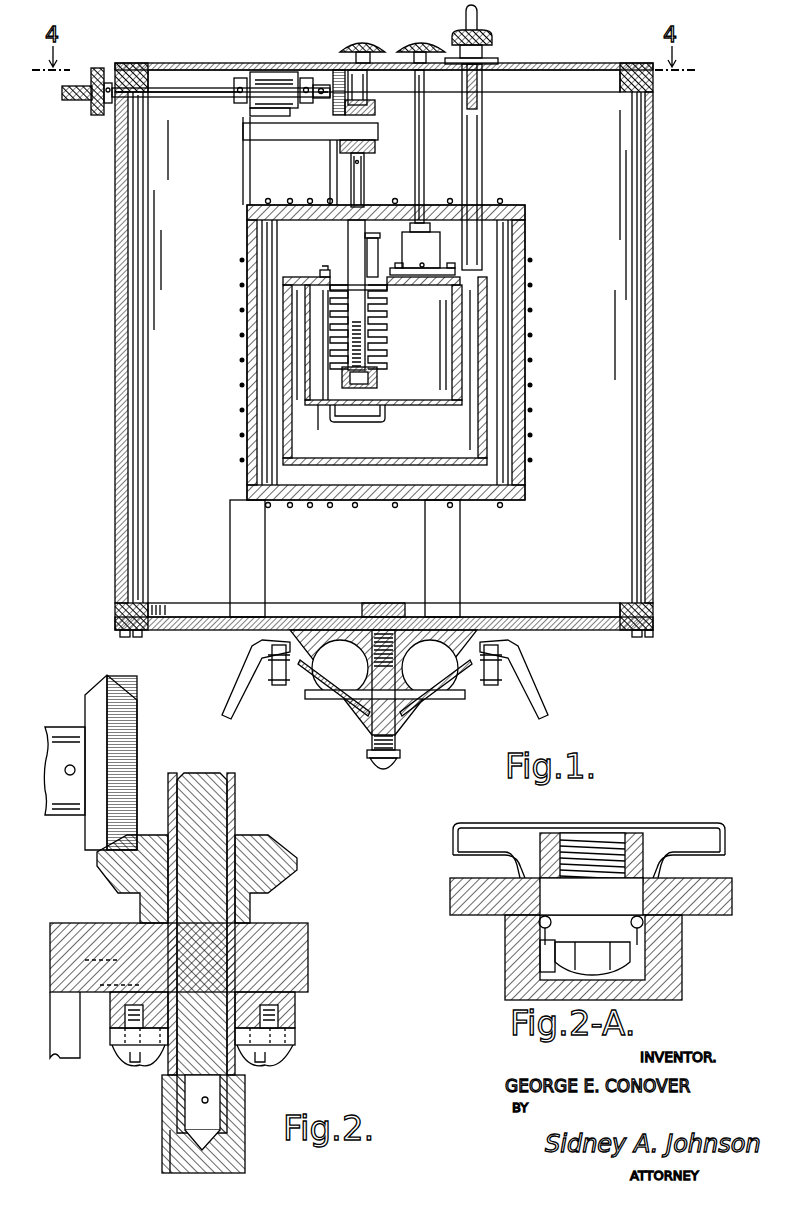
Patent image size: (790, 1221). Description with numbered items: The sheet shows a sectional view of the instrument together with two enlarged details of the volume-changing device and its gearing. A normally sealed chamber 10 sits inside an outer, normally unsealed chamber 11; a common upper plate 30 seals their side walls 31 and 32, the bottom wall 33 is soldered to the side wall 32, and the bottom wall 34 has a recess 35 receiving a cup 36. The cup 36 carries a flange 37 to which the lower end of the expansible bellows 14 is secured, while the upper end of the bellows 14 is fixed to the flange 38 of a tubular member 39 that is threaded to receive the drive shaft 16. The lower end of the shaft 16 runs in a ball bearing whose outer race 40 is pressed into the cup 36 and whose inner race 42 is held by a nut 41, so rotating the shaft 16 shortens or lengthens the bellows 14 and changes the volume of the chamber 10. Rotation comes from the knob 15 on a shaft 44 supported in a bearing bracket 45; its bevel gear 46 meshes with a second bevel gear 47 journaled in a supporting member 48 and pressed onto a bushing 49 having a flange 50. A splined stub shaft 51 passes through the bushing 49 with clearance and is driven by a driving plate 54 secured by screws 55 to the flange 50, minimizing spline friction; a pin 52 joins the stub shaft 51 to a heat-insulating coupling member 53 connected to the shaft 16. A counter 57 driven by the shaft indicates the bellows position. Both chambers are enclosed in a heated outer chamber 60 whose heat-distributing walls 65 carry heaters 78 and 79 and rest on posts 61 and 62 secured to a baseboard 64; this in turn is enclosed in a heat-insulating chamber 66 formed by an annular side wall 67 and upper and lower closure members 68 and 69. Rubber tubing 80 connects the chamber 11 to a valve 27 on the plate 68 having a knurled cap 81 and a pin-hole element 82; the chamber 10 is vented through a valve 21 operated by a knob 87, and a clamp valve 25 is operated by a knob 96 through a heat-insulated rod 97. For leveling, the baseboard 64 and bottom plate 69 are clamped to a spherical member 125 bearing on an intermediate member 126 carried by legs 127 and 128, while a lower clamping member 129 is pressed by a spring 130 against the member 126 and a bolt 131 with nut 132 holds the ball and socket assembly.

In FIG. 1, the normally sealed chamber 10 is at (423, 332).
In FIG. 1, the outer and normally unsealed chamber 11 is at (410, 449).
In FIG. 1, the expansible bellows 14 is at (387, 325).
In FIG. 2-A, the expansible bellows 14 is at (453, 840).
In FIG. 1, the knob 15 is at (78, 102).
In FIG. 1, the drive shaft 16 is at (348, 234).
In FIG. 2-A, the drive shaft 16 is at (610, 832).
In FIG. 1, the valve 21 is at (384, 262).
In FIG. 1, the clamp valve 25 is at (428, 260).
In FIG. 1, the valve 27 is at (520, 66).
In FIG. 1, the upper plate or closure member 30 is at (300, 277).
In FIG. 1, the side wall 31 is at (455, 374).
In FIG. 1, the side wall 32 is at (478, 435).
In FIG. 1, the bottom wall 33 is at (389, 465).
In FIG. 1, the bottom wall 34 is at (318, 408).
In FIG. 1, the recess 35 is at (350, 421).
In FIG. 1, the cup 36 is at (377, 381).
In FIG. 2-A, the cup 36 is at (510, 955).
In FIG. 2-A, the flange 37 is at (470, 915).
In FIG. 1, the flange 38 is at (327, 261).
In FIG. 1, the tubular member 39 is at (385, 298).
In FIG. 2-A, the tubular member 39 is at (540, 838).
In FIG. 2-A, the outer race 40 is at (645, 935).
In FIG. 2-A, the nut 41 is at (622, 960).
In FIG. 2-A, the inner race 42 is at (543, 958).
In FIG. 1, the shaft 44 is at (180, 97).
In FIG. 1, the bearing bracket 45 is at (243, 122).
In FIG. 1, the bevel gear 46 is at (333, 72).
In FIG. 2, the bevel gear 46 is at (100, 680).
In FIG. 1, the second bevel gear 47 is at (375, 108).
In FIG. 2, the second bevel gear 47 is at (285, 852).
In FIG. 1, the supporting member 48 is at (378, 133).
In FIG. 2, the supporting member 48 is at (72, 923).
In FIG. 2, the bushing 49 is at (240, 820).
In FIG. 2, the flange 50 is at (296, 1014).
In FIG. 1, the splined stub shaft 51 is at (367, 85).
In FIG. 2, the splined stub shaft 51 is at (218, 773).
In FIG. 2, the pin 52 is at (190, 1102).
In FIG. 1, the coupling member 53 is at (364, 181).
In FIG. 2, the coupling member 53 is at (162, 1143).
In FIG. 2, the driving plate 54 is at (296, 1040).
In FIG. 2, the screws 55 is at (122, 1062).
In FIG. 1, the counter 57 is at (275, 72).
In FIG. 1, the outer chamber 60 is at (512, 241).
In FIG. 1, the post 61 is at (265, 546).
In FIG. 1, the post 62 is at (460, 546).
In FIG. 1, the baseboard 64 is at (597, 630).
In FIG. 1, the walls of heat-distributing material 65 is at (512, 205).
In FIG. 1, the heat-insulating chamber 66 is at (196, 299).
In FIG. 1, the annular side wall 67 is at (115, 448).
In FIG. 1, the upper closure member 68 is at (166, 70).
In FIG. 1, the lower closure member 69 is at (167, 630).
In FIG. 1, the electrical resistor or heater 78 is at (528, 310).
In FIG. 1, the electrical resistor or heater 79 is at (290, 199).
In FIG. 1, the rubber tubing 80 is at (482, 154).
In FIG. 1, the knurled cap 81 is at (492, 39).
In FIG. 1, the additional element 82 is at (477, 20).
In FIG. 1, the operating knob 87 is at (358, 38).
In FIG. 1, the knob 96 is at (421, 38).
In FIG. 1, the heat-insulated rod 97 is at (424, 146).
In FIG. 1, the member having a spherical surface 125 is at (478, 645).
In FIG. 1, the intermediate member 126 is at (290, 690).
In FIG. 1, the supporting leg 127 is at (240, 686).
In FIG. 1, the supporting leg 128 is at (535, 690).
In FIG. 1, the lower clamping member 129 is at (345, 720).
In FIG. 1, the spring 130 is at (398, 742).
In FIG. 1, the bolt 131 is at (366, 754).
In FIG. 1, the nut 132 is at (398, 766).